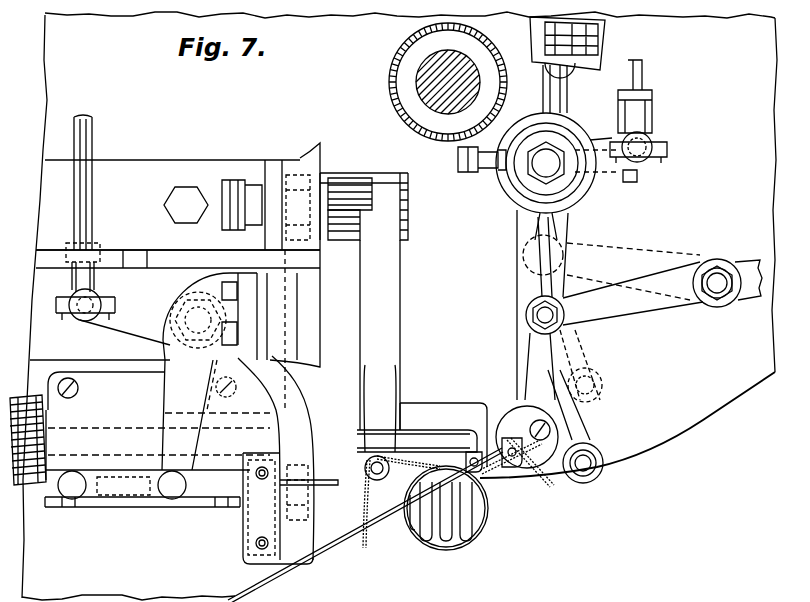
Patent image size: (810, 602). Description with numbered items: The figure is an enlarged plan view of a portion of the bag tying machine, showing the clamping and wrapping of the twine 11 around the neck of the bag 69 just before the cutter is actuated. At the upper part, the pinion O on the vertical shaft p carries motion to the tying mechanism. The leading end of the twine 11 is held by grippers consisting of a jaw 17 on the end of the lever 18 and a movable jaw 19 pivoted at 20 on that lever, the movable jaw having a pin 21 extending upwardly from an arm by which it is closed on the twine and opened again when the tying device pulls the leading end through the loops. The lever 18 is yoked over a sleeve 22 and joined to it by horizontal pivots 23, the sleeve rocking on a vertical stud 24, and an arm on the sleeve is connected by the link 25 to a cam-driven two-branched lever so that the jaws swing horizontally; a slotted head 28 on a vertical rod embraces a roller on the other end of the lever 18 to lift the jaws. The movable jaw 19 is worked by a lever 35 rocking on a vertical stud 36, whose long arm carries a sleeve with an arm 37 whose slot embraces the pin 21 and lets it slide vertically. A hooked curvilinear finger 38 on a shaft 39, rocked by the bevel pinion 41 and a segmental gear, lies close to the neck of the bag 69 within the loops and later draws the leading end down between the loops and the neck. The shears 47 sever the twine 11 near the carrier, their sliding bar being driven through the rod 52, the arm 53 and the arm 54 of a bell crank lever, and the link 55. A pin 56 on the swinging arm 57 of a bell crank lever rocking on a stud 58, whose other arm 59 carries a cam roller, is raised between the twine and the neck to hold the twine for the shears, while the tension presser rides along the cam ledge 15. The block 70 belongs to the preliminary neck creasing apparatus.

The pinion O is at (392, 105).
The vertical shaft p is at (432, 107).
The cord 11 is at (368, 528).
The cam ledge 15 is at (303, 550).
The jaw 17 is at (513, 460).
The lever 18 is at (522, 345).
The movable jaw 19 is at (518, 437).
The pivot 20 is at (533, 432).
The pin 21 is at (583, 460).
The sleeve 22 is at (540, 190).
The horizontal pivots 23 is at (490, 172).
The vertical stud 24 is at (540, 163).
The link 25 is at (645, 115).
The slotted head 28 is at (605, 28).
The lever 35 is at (645, 305).
The vertical stud 36 is at (718, 288).
The arm 37 is at (587, 428).
The curvilinear finger 38 is at (473, 462).
The shaft 39 is at (90, 442).
The bevel pinion 41 is at (25, 403).
The shears 47 is at (327, 484).
The rod 52 is at (88, 202).
The arm 53 is at (130, 323).
The arm 54 is at (177, 404).
The link 55 is at (117, 495).
The pin 56 is at (378, 478).
The swinging arm 57 is at (377, 330).
The stud 58 is at (403, 200).
The arm 59 is at (322, 232).
The neck of the bag 69 is at (483, 522).
The block 70 is at (62, 465).